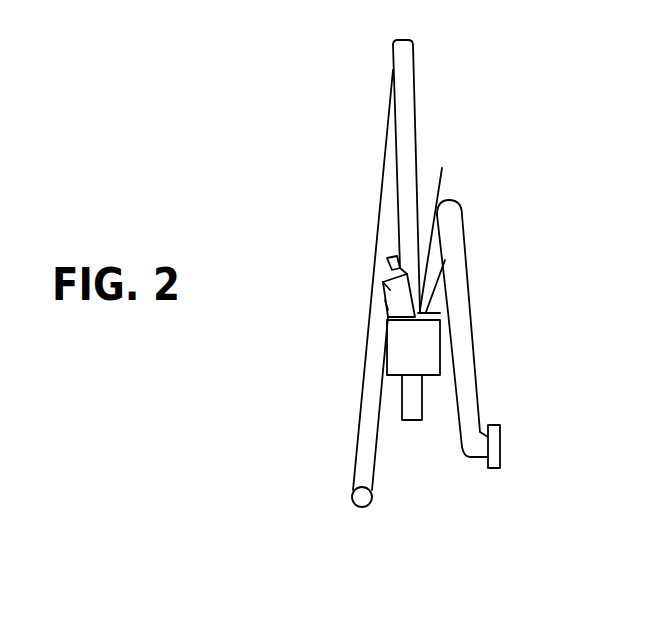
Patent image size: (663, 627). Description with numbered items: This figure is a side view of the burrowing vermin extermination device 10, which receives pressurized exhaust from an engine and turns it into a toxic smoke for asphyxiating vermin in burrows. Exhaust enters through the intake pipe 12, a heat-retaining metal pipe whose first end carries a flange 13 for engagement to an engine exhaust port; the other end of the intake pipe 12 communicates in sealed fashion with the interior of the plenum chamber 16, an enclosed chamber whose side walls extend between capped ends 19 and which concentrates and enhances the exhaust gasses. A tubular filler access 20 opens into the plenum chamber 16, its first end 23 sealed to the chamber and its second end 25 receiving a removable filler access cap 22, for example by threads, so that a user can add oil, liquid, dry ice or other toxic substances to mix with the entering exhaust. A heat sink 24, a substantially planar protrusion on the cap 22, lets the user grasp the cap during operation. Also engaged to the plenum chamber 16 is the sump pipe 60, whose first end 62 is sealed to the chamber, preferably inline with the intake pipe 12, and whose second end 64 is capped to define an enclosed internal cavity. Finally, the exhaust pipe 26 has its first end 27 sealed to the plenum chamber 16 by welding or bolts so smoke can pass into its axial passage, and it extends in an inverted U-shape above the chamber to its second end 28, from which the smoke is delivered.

The burrowing vermin extermination device 10 is at (262, 151).
The intake pipe 12 is at (465, 258).
The flange 13 is at (498, 460).
The plenum chamber 16 is at (440, 347).
The capped ends 19 is at (397, 364).
The filler access 20 is at (385, 300).
The filler access cap 22 is at (385, 278).
The first end 23 is at (440, 313).
The heat sink 24 is at (387, 262).
The second end 25 is at (385, 287).
The exhaust pipe 26 is at (383, 113).
The first end 27 is at (445, 224).
The second end 28 is at (354, 494).
The sump pipe 60 is at (422, 394).
The first end 62 is at (400, 375).
The second end 64 is at (408, 420).